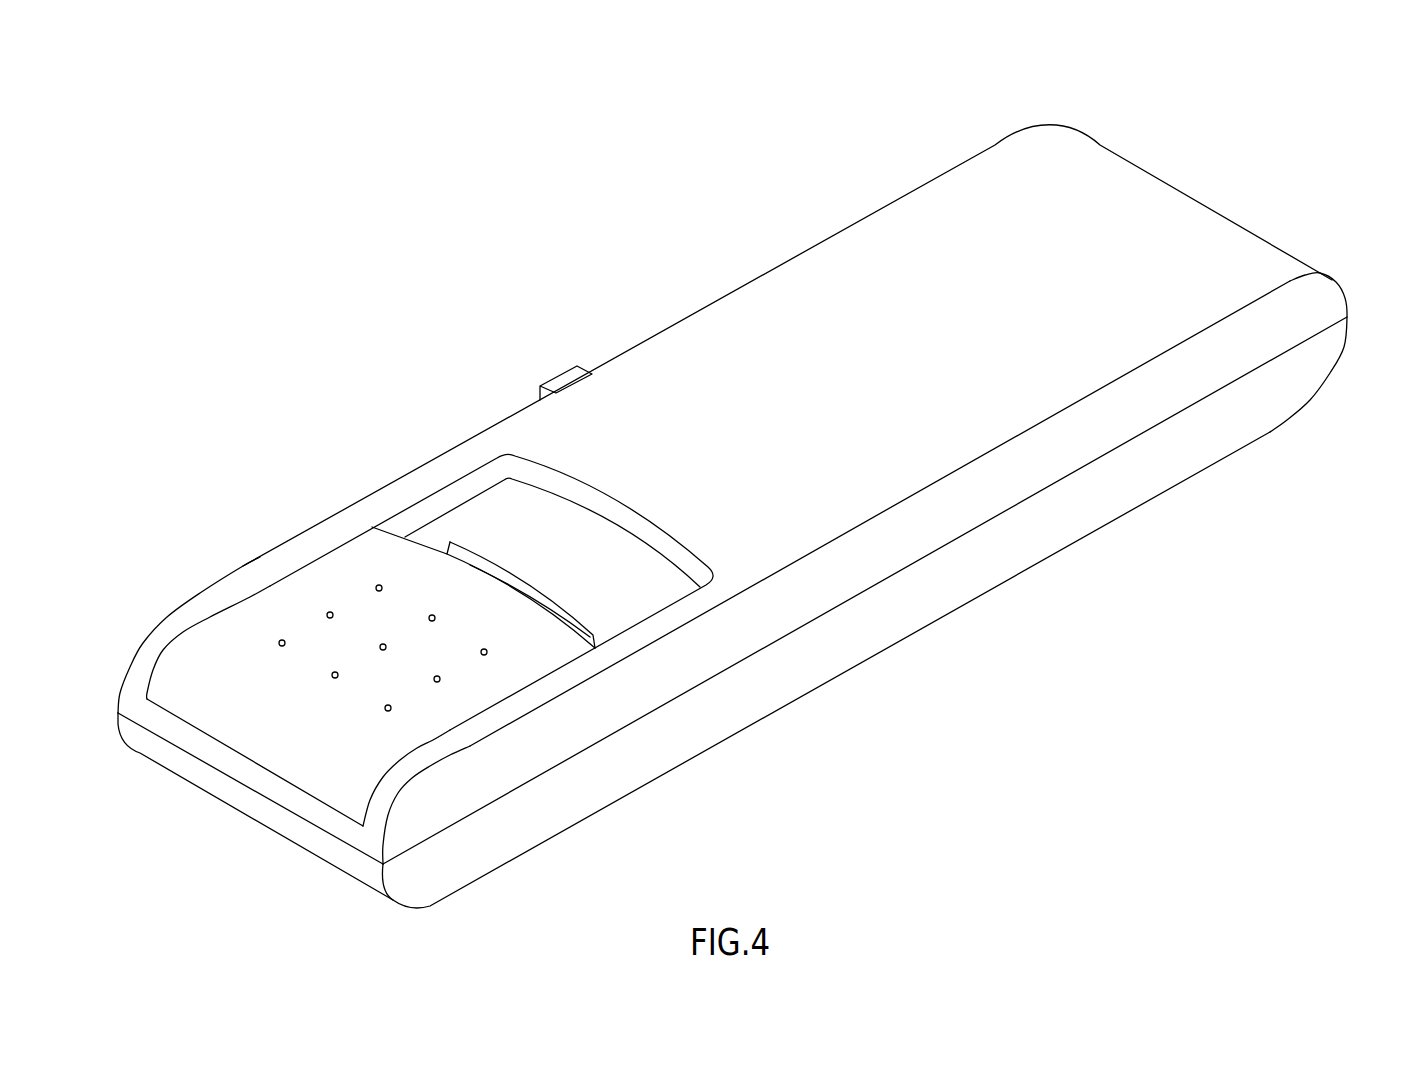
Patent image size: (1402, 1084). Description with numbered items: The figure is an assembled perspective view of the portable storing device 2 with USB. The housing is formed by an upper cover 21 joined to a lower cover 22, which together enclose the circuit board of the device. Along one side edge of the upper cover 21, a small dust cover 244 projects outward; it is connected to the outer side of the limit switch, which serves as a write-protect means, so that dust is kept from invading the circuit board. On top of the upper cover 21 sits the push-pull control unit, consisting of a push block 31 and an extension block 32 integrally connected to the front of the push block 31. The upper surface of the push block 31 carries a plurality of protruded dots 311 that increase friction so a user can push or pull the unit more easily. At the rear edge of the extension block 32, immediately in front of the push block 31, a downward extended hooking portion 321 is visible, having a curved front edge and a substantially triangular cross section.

The portable electronic device 2 is at (1250, 197).
The upper cover 21 is at (1008, 160).
The lower cover 22 is at (1248, 422).
The dust cover 244 is at (567, 380).
The push block 31 is at (295, 595).
The protruded dots 311 is at (279, 641).
The extension block 32 is at (508, 505).
The hooking portion 321 is at (597, 640).